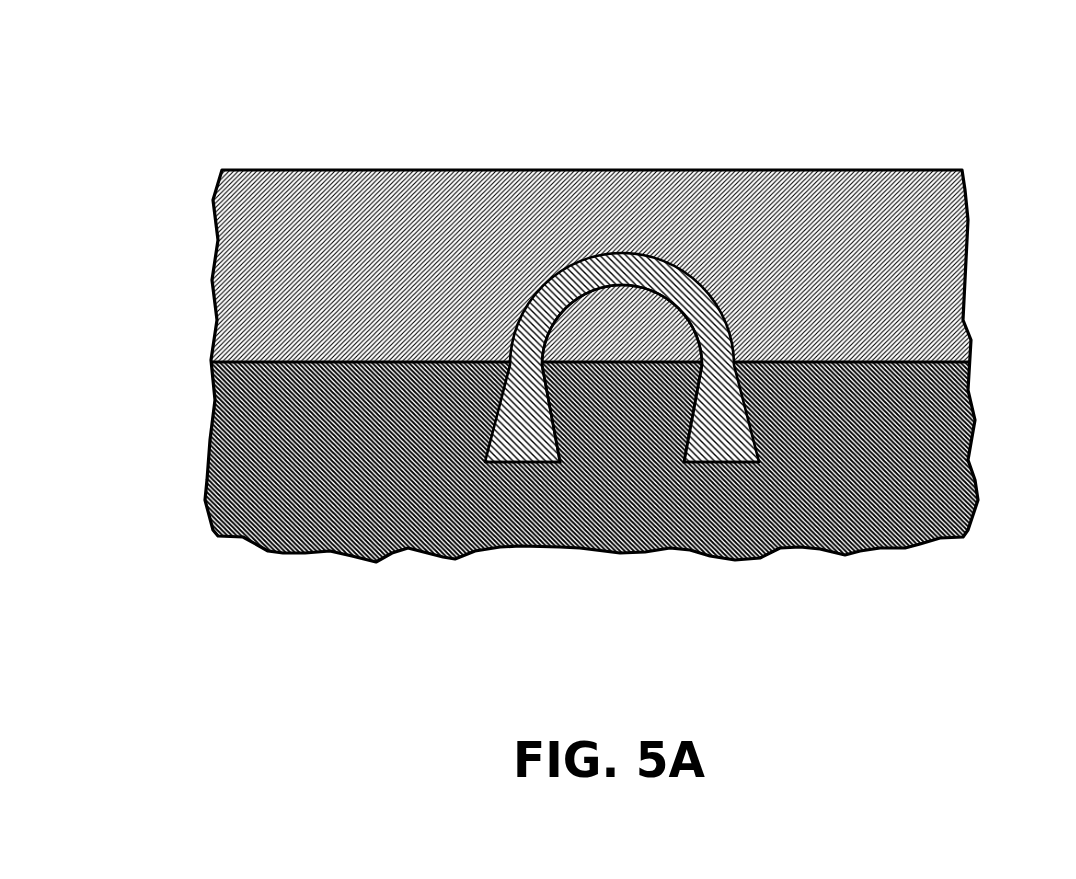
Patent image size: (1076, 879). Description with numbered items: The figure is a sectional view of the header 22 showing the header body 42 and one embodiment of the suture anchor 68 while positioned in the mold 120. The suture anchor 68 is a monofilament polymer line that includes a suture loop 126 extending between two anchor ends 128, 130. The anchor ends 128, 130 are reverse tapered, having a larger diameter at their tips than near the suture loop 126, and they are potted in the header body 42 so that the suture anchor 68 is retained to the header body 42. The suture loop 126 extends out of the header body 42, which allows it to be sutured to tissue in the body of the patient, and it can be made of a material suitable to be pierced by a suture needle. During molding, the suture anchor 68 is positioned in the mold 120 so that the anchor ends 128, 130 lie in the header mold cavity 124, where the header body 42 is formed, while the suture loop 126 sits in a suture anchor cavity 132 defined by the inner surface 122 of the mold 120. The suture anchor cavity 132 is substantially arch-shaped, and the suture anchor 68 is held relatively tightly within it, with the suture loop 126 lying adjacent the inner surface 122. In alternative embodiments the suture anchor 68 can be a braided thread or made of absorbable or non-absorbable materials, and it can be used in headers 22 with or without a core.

The header 22 is at (568, 337).
The header body 42 is at (571, 467).
The suture anchor 68 is at (560, 266).
The mold 120 is at (571, 310).
The inner surface 122 is at (911, 364).
The header mold cavity 124 is at (905, 476).
The suture loop 126 is at (772, 367).
The anchor end 128 is at (522, 463).
The anchor end 130 is at (698, 463).
The suture anchor cavity 132 is at (702, 326).